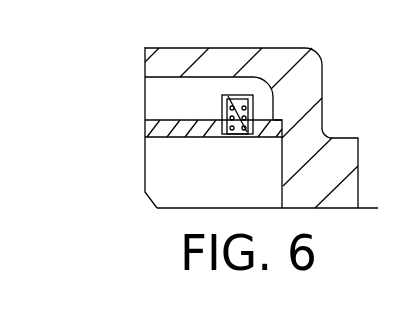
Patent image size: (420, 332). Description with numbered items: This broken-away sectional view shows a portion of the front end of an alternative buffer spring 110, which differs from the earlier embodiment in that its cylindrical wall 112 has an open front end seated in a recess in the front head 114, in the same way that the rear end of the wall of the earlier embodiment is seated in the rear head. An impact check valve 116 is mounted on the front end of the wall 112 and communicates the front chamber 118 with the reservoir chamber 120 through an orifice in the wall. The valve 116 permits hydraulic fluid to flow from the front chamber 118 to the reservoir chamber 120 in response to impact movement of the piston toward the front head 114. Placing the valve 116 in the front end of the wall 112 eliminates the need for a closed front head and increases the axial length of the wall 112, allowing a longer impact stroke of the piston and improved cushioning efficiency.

The buffer spring 110 is at (118, 70).
The cylindrical wall 112 is at (145, 127).
The front head 114 is at (318, 90).
The impact check valve 116 is at (239, 93).
The front chamber 118 is at (237, 190).
The reservoir chamber 120 is at (180, 77).